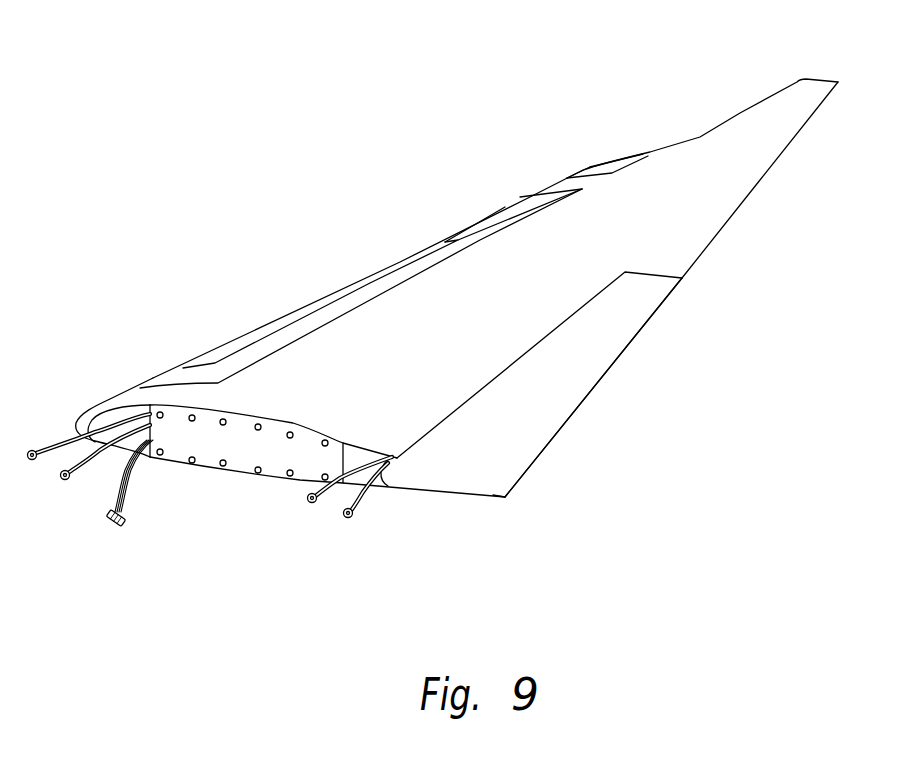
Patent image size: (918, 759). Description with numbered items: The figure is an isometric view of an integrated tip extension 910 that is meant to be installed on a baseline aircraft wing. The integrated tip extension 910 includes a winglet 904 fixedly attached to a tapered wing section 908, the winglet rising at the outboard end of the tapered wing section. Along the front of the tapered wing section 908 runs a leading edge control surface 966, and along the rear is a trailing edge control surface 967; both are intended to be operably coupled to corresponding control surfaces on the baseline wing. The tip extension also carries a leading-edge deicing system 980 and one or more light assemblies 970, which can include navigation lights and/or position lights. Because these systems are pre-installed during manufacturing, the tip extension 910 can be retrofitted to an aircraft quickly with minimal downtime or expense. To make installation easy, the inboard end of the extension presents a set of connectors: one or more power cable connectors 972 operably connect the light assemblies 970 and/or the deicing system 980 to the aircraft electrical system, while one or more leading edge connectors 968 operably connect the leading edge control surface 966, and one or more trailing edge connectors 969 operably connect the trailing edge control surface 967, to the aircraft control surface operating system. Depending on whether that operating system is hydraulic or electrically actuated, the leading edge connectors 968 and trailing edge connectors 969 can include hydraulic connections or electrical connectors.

The winglet 904 is at (812, 88).
The tapered wing section 908 is at (513, 287).
The integrated tip extension 910 is at (313, 126).
The leading edge control surface 966 is at (260, 340).
The trailing edge control surface 967 is at (538, 420).
The leading edge connectors 968 is at (22, 455).
The trailing edge connectors 969 is at (350, 532).
The light assemblies 970 is at (584, 170).
The power cable connectors 972 is at (122, 524).
The leading-edge deicing system 980 is at (483, 228).